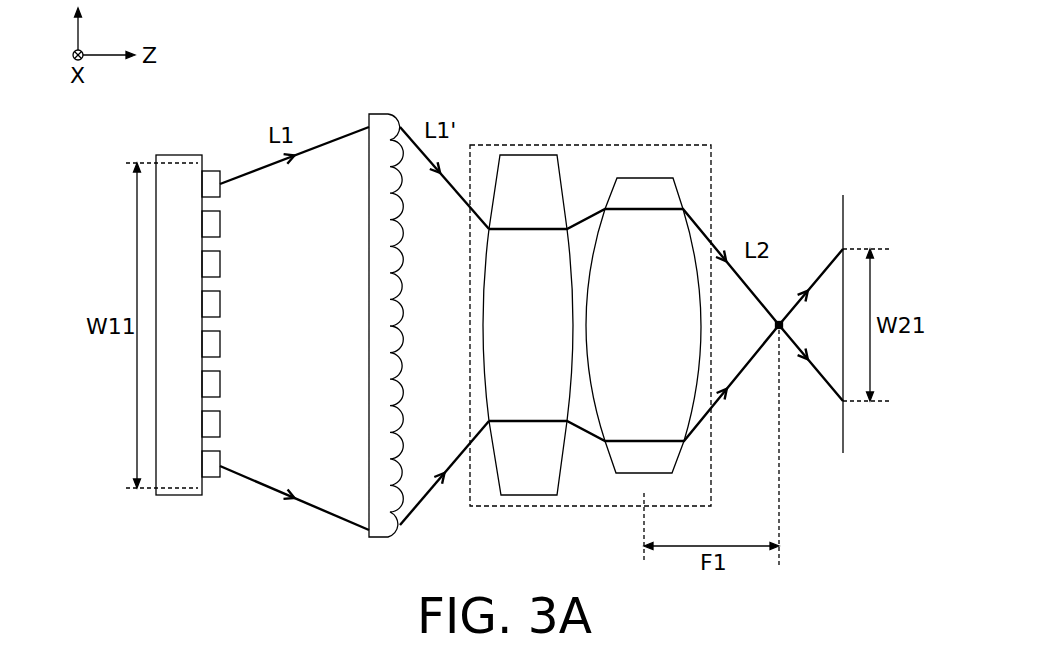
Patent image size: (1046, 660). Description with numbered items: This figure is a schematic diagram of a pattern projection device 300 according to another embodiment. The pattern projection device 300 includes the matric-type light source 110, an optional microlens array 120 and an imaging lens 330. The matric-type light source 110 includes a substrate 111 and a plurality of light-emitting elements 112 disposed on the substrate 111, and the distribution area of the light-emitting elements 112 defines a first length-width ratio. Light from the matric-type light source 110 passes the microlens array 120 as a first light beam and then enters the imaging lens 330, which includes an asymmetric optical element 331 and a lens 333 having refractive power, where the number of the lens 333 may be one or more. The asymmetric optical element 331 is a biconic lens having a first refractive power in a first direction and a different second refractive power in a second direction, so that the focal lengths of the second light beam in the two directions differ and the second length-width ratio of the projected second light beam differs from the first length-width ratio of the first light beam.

The pattern projection device 300 is at (178, 128).
The matric-type light source 110 is at (206, 368).
The substrate 111 is at (183, 495).
The light-emitting elements 112 is at (215, 479).
The microlens array 120 is at (380, 537).
The imaging lens 330 is at (621, 353).
The asymmetric optical element 331 is at (660, 473).
The lens 333 is at (527, 495).